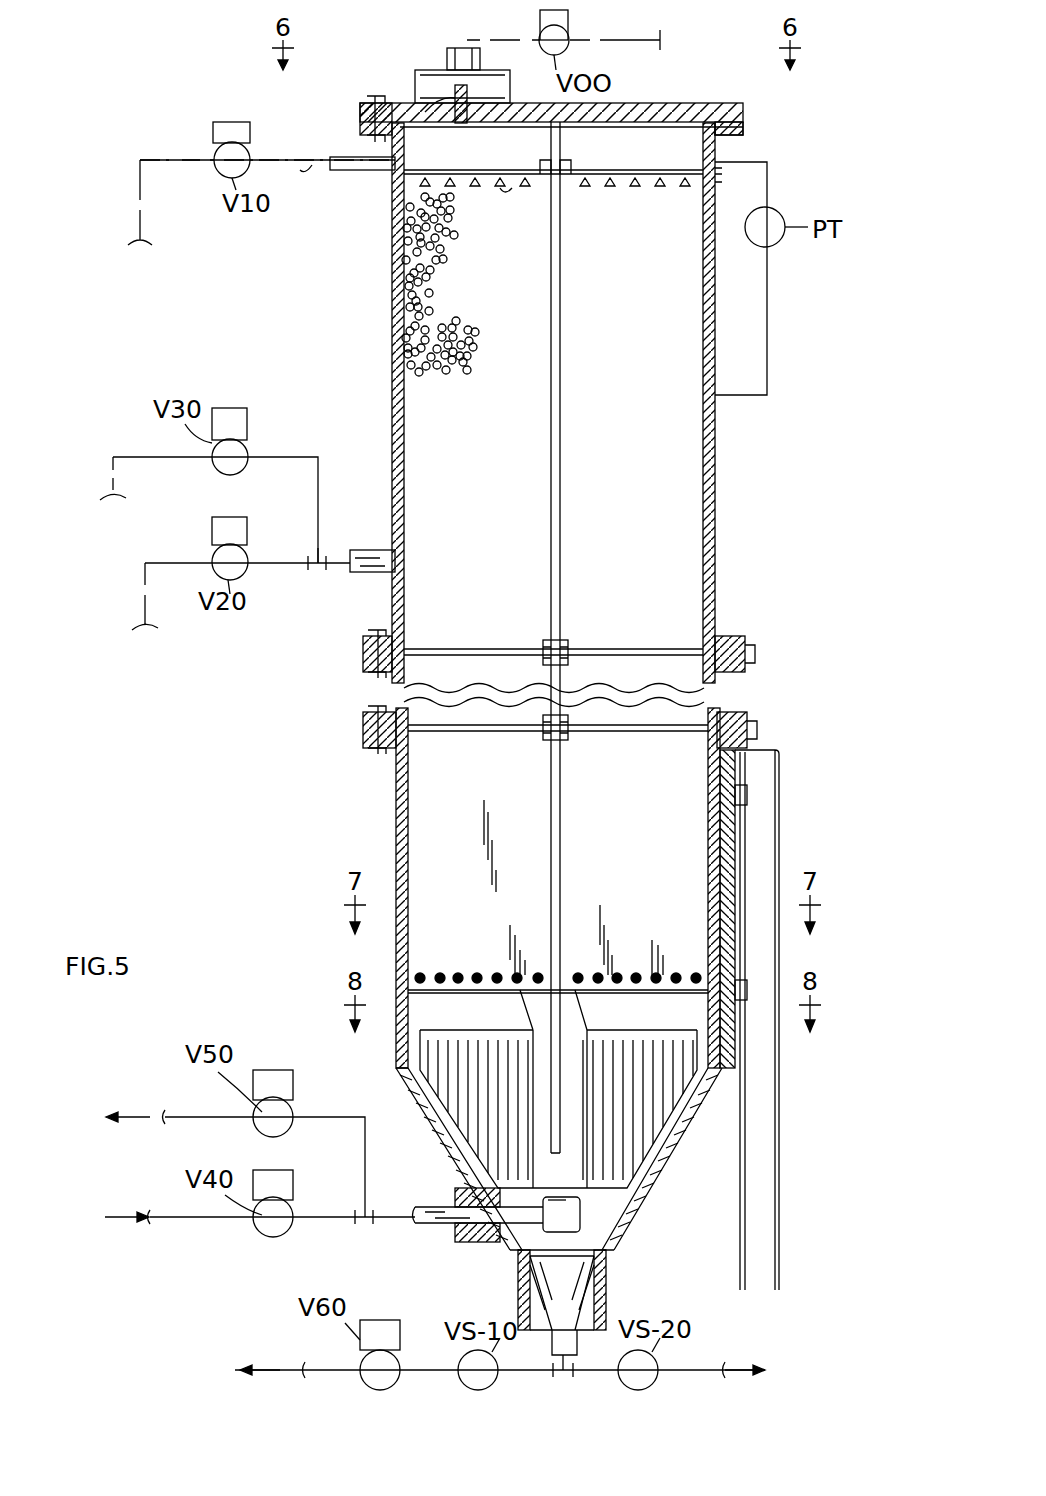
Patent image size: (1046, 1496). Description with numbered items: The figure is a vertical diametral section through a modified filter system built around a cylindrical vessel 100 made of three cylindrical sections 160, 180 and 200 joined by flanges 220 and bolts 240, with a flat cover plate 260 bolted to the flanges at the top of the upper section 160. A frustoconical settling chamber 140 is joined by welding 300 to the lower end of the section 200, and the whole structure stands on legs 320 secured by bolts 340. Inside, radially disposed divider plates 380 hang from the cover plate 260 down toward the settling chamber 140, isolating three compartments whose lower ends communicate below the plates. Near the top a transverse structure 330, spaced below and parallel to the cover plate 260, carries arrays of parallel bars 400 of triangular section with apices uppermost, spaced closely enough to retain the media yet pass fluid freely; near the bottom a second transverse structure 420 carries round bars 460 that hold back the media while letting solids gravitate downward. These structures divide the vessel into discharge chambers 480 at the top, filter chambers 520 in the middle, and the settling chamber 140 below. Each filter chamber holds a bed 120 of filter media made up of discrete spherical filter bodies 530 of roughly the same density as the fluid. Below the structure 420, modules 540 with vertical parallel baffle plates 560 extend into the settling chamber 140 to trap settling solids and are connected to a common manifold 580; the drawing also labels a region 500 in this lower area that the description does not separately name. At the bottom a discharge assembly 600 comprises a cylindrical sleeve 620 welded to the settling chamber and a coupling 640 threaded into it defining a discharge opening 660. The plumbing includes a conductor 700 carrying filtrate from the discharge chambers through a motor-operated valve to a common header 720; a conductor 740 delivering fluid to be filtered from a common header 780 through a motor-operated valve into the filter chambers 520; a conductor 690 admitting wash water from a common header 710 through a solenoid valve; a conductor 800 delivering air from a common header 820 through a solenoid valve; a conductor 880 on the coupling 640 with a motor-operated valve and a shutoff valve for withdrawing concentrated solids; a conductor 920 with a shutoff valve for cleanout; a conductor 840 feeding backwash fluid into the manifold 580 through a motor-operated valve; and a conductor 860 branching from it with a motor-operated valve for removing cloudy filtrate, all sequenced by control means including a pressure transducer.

The cylindrical vessel 100 is at (728, 522).
The bed of filter media 120 is at (495, 392).
The settling chamber 140 is at (600, 1210).
The cylindrical section 160 is at (715, 500).
The cylindrical section 180 is at (720, 692).
The cylindrical section 200 is at (396, 790).
The flanges 220 is at (743, 125).
The bolts 240 is at (360, 115).
The flat cover plate 260 is at (640, 103).
The welding 300 is at (405, 1060).
The legs 320 is at (779, 1108).
The transverse structure 330 is at (385, 170).
The bolts 340 is at (747, 795).
The divider plates 380 is at (405, 603).
The bars 400 is at (505, 188).
The transverse structure 420 is at (440, 960).
The bars 460 is at (488, 972).
The discharge chambers 480 is at (512, 161).
The screen basket 500 is at (698, 1026).
The filter chambers 520 is at (498, 520).
The filter bodies 530 is at (422, 378).
The modules 540 is at (468, 1035).
The baffle plates 560 is at (495, 1050).
The common manifold 580 is at (570, 1048).
The discharge assembly 600 is at (512, 1285).
The cylindrical sleeve 620 is at (605, 1265).
The coupling 640 is at (595, 1298).
The discharge opening 660 is at (530, 1300).
The conductor 690 is at (525, 30).
The conductor 700 is at (318, 170).
The common header 710 is at (590, 40).
The common header 720 is at (140, 225).
The conductor 740 is at (284, 563).
The common header 780 is at (145, 575).
The conductor 800 is at (278, 457).
The common header 820 is at (113, 486).
The conductor 840 is at (440, 1225).
The conductor 860 is at (318, 1117).
The conductor 880 is at (535, 1378).
The conductor 920 is at (600, 1378).